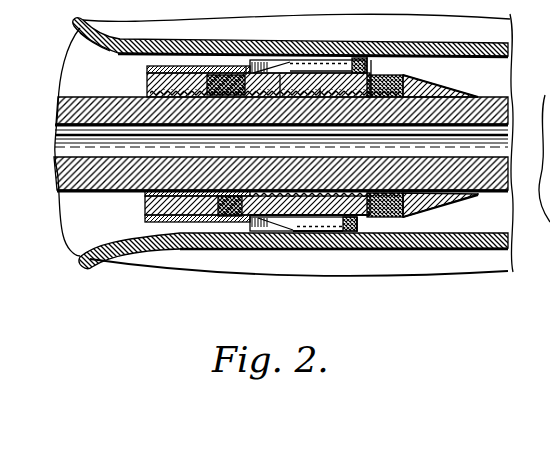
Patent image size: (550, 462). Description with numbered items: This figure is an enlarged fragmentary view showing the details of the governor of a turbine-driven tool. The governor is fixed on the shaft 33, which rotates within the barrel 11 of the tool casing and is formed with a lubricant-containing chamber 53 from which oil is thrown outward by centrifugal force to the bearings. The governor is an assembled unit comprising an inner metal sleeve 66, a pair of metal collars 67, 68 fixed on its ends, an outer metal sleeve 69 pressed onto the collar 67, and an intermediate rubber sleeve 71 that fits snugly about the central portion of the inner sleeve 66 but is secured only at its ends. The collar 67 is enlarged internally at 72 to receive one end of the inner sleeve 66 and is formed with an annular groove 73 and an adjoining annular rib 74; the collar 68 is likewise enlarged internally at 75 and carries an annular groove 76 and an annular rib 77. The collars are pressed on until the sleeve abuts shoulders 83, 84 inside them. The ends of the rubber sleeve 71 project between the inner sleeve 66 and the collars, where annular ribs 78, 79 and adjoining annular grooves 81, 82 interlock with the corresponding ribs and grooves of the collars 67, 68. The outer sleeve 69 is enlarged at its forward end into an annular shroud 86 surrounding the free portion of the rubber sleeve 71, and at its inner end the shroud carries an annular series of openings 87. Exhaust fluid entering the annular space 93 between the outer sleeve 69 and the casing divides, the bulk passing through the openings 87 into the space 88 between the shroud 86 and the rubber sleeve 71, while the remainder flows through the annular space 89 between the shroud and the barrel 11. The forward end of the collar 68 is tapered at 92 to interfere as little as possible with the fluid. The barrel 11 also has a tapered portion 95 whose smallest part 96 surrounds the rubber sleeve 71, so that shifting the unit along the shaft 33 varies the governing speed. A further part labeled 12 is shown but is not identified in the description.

The barrel 11 is at (440, 43).
The outer tube 12 is at (90, 25).
The shaft 33 is at (55, 173).
The lubricant-containing chamber 53 is at (57, 150).
The inner metal sleeve 66 is at (320, 96).
The collar 67 is at (147, 80).
The collar 68 is at (437, 213).
The outer metal sleeve 69 is at (183, 67).
The rubber sleeve 71 is at (280, 75).
The internal enlargement 72 is at (213, 82).
The annular groove 73 is at (238, 70).
The annular rib 74 is at (238, 226).
The internal enlargement 75 is at (423, 197).
The annular groove 76 is at (394, 217).
The annular rib 77 is at (370, 217).
The annular rib 78 is at (215, 228).
The annular rib 79 is at (415, 80).
The annular groove 81 is at (246, 66).
The annular groove 82 is at (371, 62).
The shoulder 83 is at (146, 200).
The shoulder 84 is at (448, 87).
The annular shroud 86 is at (320, 230).
The openings 87 is at (271, 230).
The space 88 is at (381, 44).
The annular space 89 is at (356, 61).
The tapered forward end 92 is at (471, 206).
The annular space 93 is at (152, 251).
The tapered portion 95 is at (117, 49).
The smallest part 96 is at (288, 64).